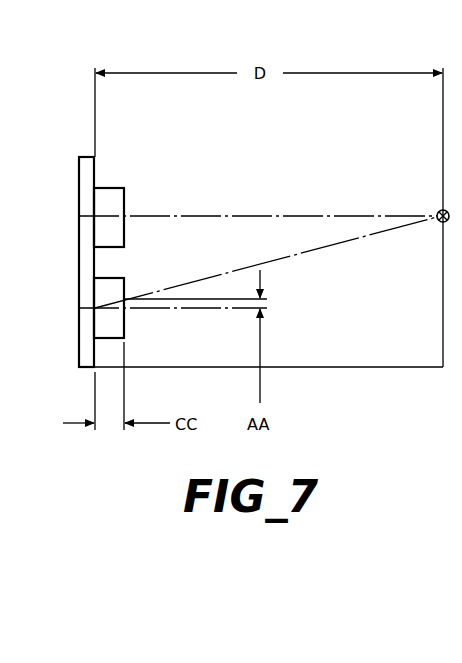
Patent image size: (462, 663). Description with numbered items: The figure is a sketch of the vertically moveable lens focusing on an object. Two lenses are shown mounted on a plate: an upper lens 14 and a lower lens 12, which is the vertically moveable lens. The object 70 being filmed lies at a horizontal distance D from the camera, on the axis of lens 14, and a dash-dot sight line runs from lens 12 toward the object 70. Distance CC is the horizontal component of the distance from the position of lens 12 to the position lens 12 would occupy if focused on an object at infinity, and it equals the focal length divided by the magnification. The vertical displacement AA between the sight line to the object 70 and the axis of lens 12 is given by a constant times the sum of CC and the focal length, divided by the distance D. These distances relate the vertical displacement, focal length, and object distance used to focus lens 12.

The lens 14 is at (125, 200).
The lens 12 is at (125, 323).
The object 70 is at (437, 211).